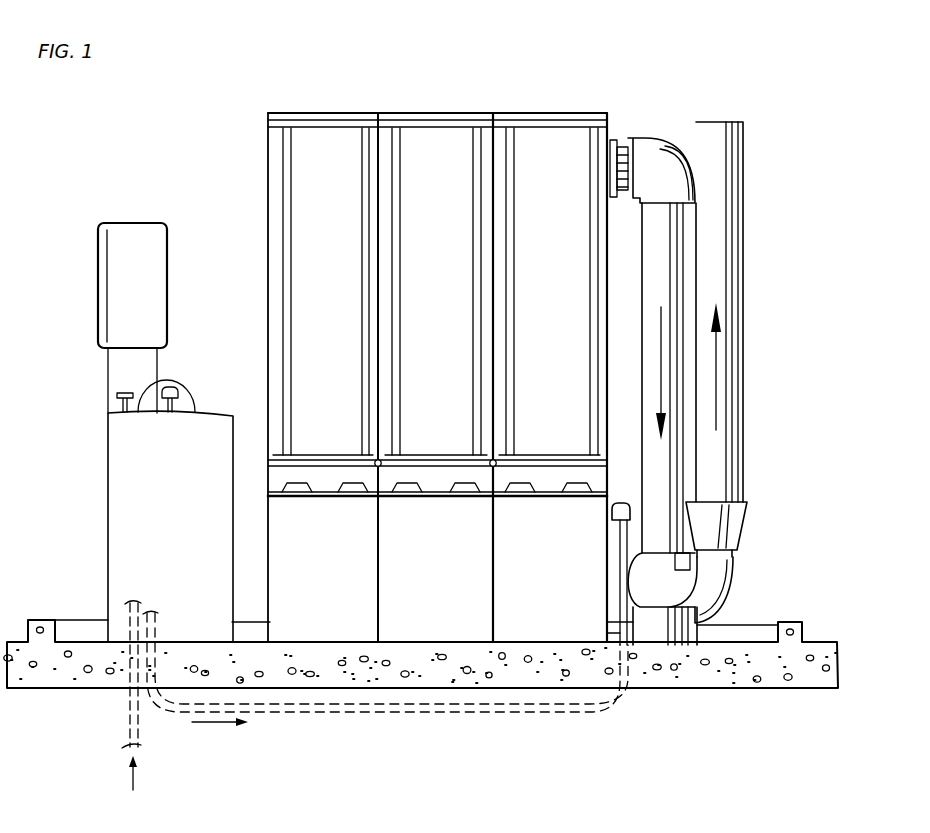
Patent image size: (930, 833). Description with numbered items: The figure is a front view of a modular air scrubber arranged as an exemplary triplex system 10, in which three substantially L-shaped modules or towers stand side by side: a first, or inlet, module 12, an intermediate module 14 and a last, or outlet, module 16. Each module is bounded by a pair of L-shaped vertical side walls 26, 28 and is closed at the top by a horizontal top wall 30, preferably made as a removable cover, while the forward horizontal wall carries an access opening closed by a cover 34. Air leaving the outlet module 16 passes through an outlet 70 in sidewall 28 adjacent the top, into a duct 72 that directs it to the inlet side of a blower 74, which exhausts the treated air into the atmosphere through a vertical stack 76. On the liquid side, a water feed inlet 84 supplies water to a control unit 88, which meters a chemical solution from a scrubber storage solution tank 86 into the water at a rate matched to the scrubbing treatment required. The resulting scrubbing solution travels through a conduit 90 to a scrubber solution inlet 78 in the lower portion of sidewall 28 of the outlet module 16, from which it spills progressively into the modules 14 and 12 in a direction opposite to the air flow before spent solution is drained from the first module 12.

The triplex system 10 is at (171, 151).
The first module 12 is at (344, 112).
The intermediate module 14 is at (443, 112).
The outlet module 16 is at (538, 112).
The vertical side wall 26 is at (380, 240).
The vertical side wall 28 is at (378, 212).
The horizontal top wall 30 is at (478, 112).
The cover 34 is at (440, 485).
The outlet 70 is at (614, 140).
The duct 72 is at (652, 318).
The blower 74 is at (641, 577).
The vertical stack 76 is at (738, 282).
The scrubber solution inlet 78 is at (607, 523).
The water feed inlet 84 is at (130, 705).
The scrubber storage solution tank 86 is at (117, 500).
The control unit 88 is at (122, 272).
The conduit 90 is at (515, 713).